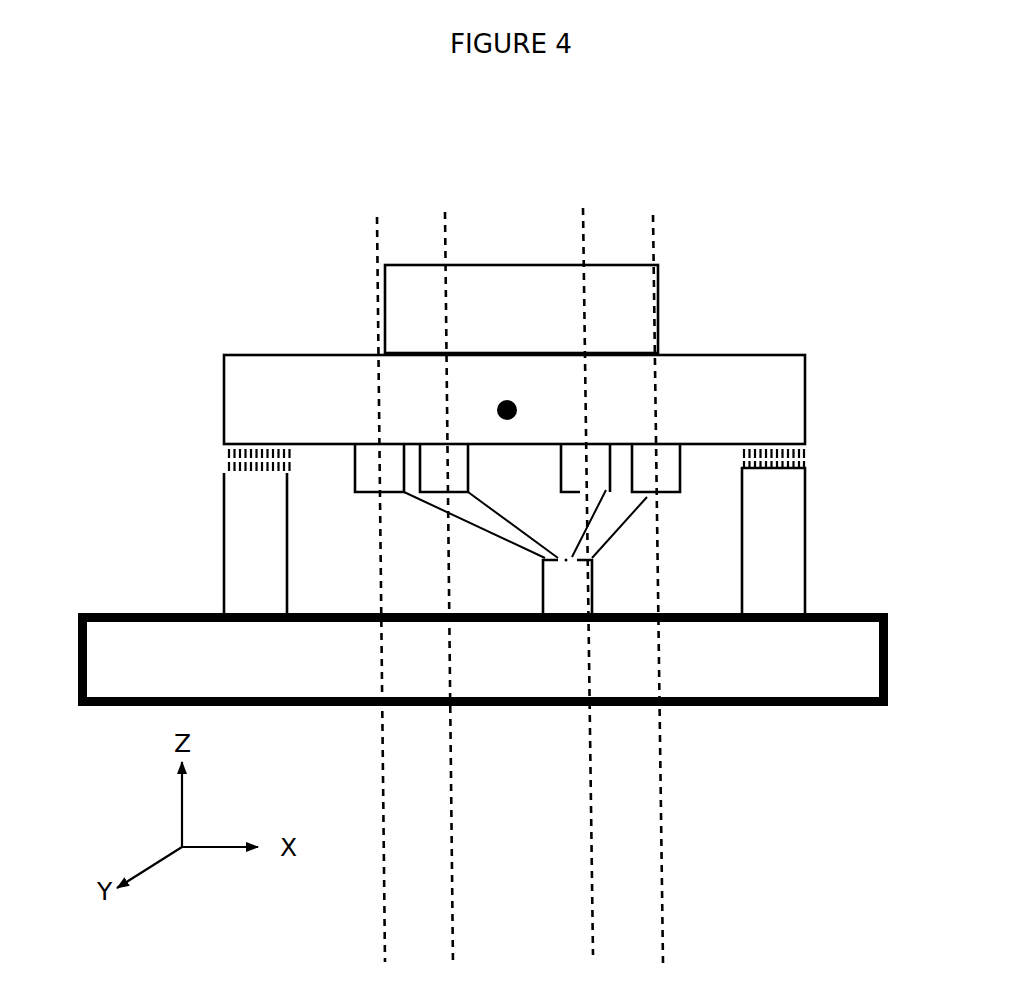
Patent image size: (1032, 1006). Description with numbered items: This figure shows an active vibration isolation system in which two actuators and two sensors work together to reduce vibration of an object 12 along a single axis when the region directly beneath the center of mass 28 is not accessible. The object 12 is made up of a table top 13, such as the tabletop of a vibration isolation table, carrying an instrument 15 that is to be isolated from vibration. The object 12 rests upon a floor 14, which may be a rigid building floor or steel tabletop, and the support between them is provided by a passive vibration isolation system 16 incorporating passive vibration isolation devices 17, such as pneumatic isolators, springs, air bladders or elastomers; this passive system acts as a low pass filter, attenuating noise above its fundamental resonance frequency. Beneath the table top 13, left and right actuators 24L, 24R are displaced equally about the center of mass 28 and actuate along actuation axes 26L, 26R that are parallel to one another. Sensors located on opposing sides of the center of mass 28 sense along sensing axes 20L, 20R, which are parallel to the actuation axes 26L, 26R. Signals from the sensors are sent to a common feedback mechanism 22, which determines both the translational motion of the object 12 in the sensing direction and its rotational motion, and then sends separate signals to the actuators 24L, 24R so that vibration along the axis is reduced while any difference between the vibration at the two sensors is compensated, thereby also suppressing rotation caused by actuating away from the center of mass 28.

The object 12 is at (556, 335).
The table top 13 is at (795, 384).
The floor 14 is at (866, 684).
The instrument 15 is at (650, 321).
The passive vibration isolation system 16 is at (247, 521).
The passive vibration isolation devices 17 is at (223, 458).
The left sensing axis 20L is at (448, 220).
The right sensing axis 20R is at (605, 480).
The common feedback mechanism 22 is at (600, 577).
The left actuator 24L is at (393, 493).
The right actuator 24R is at (668, 495).
The left actuation axis 26L is at (377, 222).
The right actuation axis 26R is at (655, 222).
The center of mass 28 is at (490, 410).